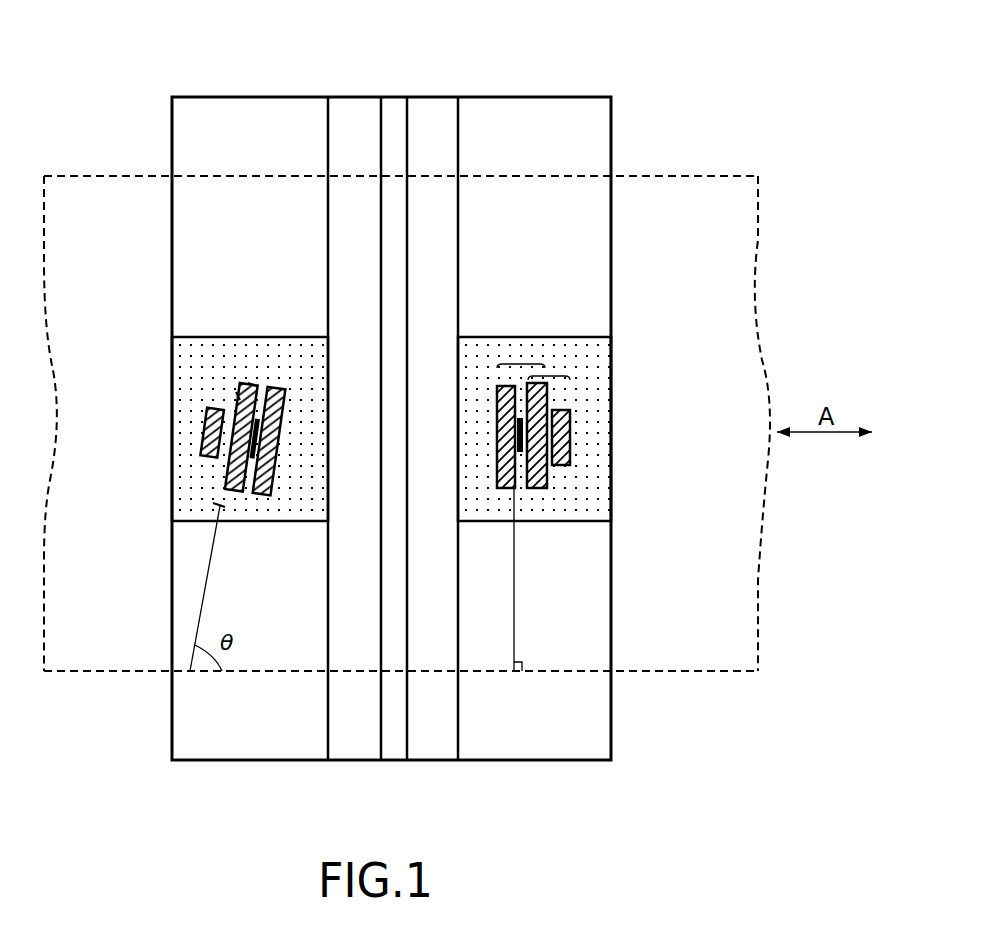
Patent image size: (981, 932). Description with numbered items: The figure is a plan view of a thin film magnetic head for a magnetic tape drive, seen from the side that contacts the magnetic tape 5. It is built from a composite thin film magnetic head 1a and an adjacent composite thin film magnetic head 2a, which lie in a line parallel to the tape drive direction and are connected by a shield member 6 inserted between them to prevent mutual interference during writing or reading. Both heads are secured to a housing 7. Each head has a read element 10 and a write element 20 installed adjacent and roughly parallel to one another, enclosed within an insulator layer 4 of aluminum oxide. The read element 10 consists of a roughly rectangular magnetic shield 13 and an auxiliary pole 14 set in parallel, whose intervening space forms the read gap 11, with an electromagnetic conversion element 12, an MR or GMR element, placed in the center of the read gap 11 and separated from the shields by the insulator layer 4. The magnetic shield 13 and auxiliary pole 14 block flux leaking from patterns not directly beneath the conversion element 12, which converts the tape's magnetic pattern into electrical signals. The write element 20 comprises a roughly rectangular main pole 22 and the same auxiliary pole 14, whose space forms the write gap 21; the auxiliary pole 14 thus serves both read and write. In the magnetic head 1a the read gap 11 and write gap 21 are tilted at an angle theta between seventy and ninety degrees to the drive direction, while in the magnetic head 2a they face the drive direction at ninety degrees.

The composite thin film magnetic head 1a is at (265, 540).
The composite thin film magnetic head 2a is at (487, 540).
The insulator layer 4 is at (180, 470).
The magnetic tape 5 is at (655, 655).
The shield member 6 is at (394, 112).
The housing 7 is at (178, 140).
The read element 10 is at (383, 479).
The read gap 11 is at (269, 441).
The electromagnetic conversion element 12 is at (254, 438).
The magnetic shield 13 is at (241, 437).
The auxiliary pole 14 is at (252, 383).
The write element 20 is at (205, 507).
The write gap 21 is at (237, 398).
The main pole 22 is at (212, 433).